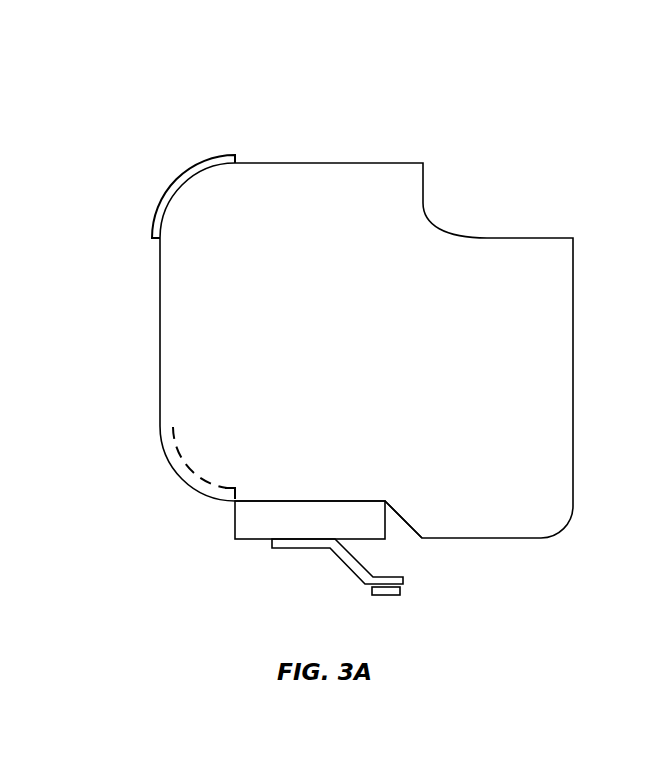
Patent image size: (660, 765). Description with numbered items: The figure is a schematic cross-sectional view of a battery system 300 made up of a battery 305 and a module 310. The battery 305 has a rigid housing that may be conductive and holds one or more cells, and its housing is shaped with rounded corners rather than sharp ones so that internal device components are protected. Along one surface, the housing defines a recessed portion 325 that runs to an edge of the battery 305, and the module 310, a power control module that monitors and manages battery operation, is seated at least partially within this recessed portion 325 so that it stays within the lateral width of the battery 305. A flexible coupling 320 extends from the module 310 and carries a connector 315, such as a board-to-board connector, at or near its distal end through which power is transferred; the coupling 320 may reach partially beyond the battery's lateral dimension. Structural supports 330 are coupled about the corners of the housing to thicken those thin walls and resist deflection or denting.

The battery system 300 is at (182, 121).
The battery 305 is at (325, 163).
The module 310 is at (235, 527).
The connector 315 is at (400, 593).
The coupling 320 is at (312, 552).
The recessed portion 325 is at (398, 510).
The structural supports 330 is at (155, 202).